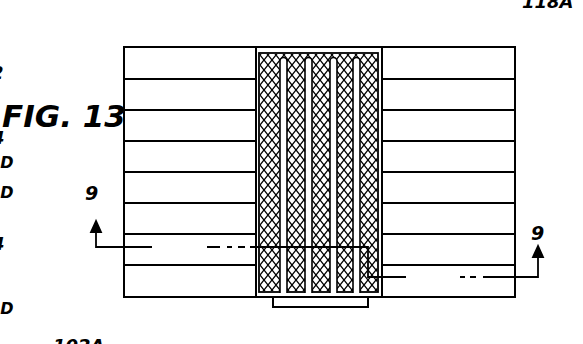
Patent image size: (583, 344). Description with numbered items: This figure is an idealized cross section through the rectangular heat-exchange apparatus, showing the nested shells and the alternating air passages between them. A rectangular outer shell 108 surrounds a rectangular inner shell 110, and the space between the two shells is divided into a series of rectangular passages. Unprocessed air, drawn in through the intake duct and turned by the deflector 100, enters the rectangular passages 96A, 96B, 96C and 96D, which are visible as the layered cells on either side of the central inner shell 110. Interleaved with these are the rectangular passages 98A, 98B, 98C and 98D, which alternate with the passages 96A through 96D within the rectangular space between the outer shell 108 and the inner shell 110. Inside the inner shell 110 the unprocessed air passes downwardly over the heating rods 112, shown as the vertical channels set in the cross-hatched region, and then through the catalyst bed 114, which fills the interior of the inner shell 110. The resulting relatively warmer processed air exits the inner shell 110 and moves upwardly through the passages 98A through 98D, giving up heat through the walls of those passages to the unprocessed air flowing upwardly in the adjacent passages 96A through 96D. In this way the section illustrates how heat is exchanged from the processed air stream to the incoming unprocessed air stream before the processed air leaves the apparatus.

The rectangular outer shell 108 is at (462, 46).
The rectangular passage 96A is at (198, 260).
The rectangular passage 96B is at (190, 198).
The rectangular passage 96C is at (190, 136).
The rectangular passage 96D is at (191, 74).
The rectangular passage 98A is at (245, 290).
The rectangular passage 98B is at (245, 229).
The rectangular passage 98C is at (245, 167).
The rectangular passage 98D is at (246, 105).
The rectangular inner shell 110 is at (254, 76).
The heating rods 112 is at (282, 58).
The catalyst bed 114 is at (369, 58).
The deflector 100 is at (368, 338).